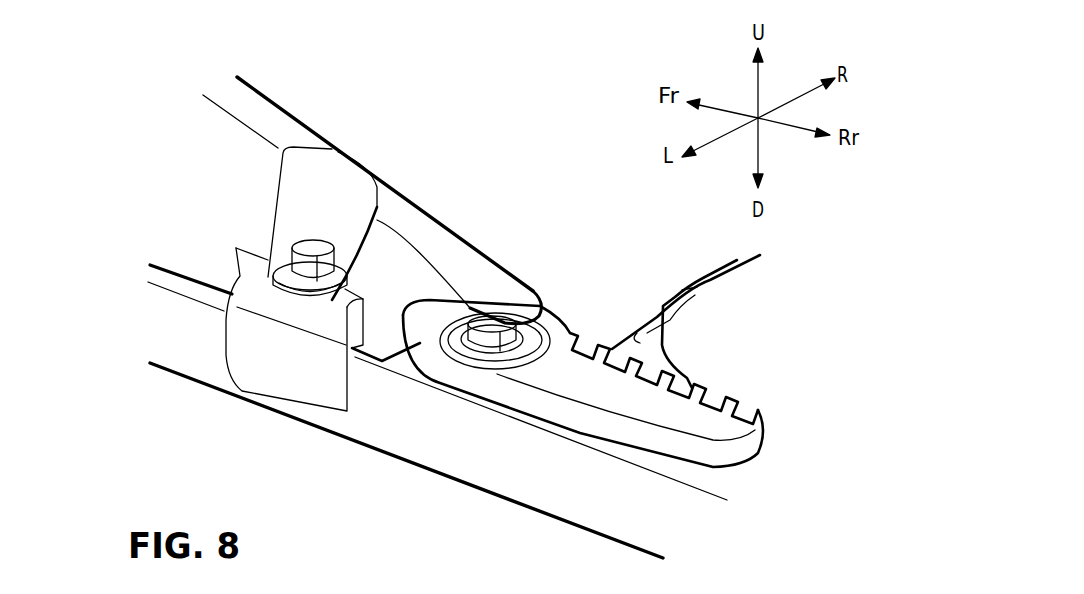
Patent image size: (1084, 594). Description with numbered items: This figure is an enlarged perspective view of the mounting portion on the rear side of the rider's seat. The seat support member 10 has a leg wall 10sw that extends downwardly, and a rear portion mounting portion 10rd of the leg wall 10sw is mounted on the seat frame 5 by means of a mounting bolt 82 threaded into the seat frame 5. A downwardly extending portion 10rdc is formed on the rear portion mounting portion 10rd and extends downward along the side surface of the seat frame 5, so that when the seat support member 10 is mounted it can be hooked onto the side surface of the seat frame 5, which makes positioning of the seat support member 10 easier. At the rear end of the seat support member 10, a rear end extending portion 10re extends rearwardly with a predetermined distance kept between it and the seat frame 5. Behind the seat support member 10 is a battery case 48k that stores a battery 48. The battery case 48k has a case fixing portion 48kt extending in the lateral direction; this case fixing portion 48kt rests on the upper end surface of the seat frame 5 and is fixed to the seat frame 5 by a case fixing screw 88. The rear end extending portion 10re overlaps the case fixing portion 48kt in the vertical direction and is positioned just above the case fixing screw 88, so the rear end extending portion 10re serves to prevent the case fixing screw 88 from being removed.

The seat support member 10 is at (276, 102).
The leg wall 10sw is at (212, 193).
The rear end extending portion 10re is at (520, 293).
The mounting bolt 82 is at (311, 243).
The rear portion mounting portion 10rd is at (255, 272).
The downwardly extending portion 10rdc is at (252, 368).
The seat frame 5 is at (467, 462).
The battery 48 is at (630, 345).
The battery case 48k is at (660, 303).
The case fixing portion 48kt is at (605, 393).
The case fixing screw 88 is at (460, 343).